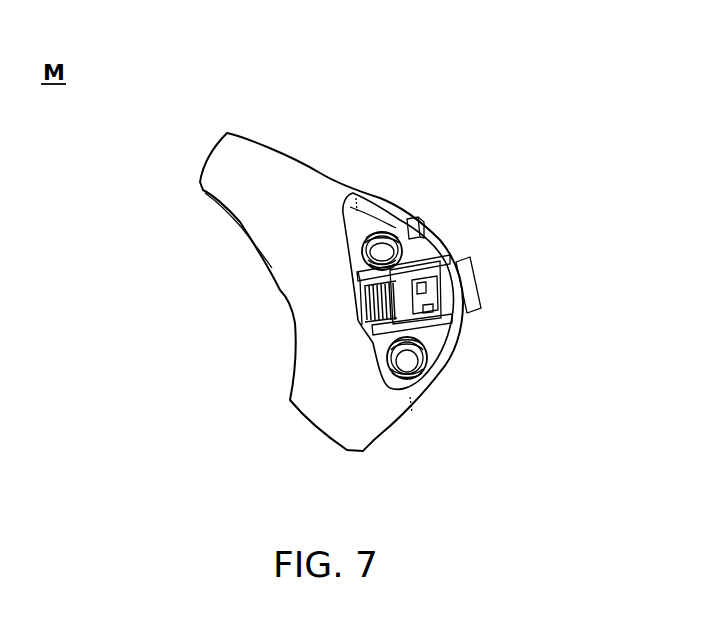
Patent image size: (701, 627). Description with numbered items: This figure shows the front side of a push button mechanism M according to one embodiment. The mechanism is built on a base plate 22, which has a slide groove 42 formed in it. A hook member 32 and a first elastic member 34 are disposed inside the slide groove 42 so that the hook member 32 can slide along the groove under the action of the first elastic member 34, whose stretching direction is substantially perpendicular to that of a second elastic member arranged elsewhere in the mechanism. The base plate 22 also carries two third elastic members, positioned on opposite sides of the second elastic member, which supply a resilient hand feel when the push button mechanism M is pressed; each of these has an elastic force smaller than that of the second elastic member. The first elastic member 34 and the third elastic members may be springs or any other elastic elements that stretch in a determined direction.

The base plate 22 is at (225, 212).
The hook member 32 is at (470, 287).
The first elastic member 34 is at (365, 300).
The slide groove 42 is at (420, 250).